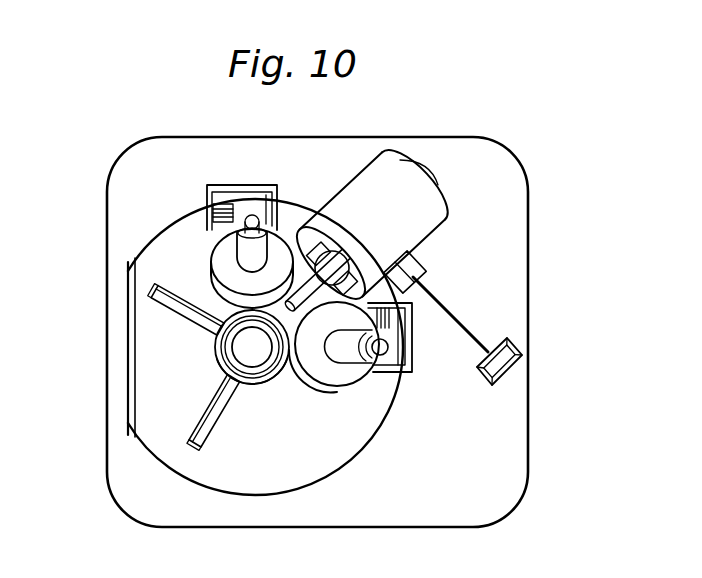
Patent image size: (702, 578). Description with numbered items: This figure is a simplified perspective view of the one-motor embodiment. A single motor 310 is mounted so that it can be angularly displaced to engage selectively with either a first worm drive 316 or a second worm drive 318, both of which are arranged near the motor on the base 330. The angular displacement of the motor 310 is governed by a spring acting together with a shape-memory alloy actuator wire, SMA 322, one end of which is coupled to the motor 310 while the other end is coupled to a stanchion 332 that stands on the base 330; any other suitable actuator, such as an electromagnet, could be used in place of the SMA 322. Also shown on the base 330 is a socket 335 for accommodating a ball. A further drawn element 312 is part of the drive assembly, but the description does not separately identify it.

The motor 310 is at (407, 212).
The drive shaft assembly 312 is at (310, 284).
The first worm drive 316 is at (322, 367).
The second worm drive 318 is at (210, 256).
The SMA actuator wire 322 is at (433, 294).
The base 330 is at (410, 507).
The stanchion 332 is at (478, 374).
The socket 335 is at (255, 348).